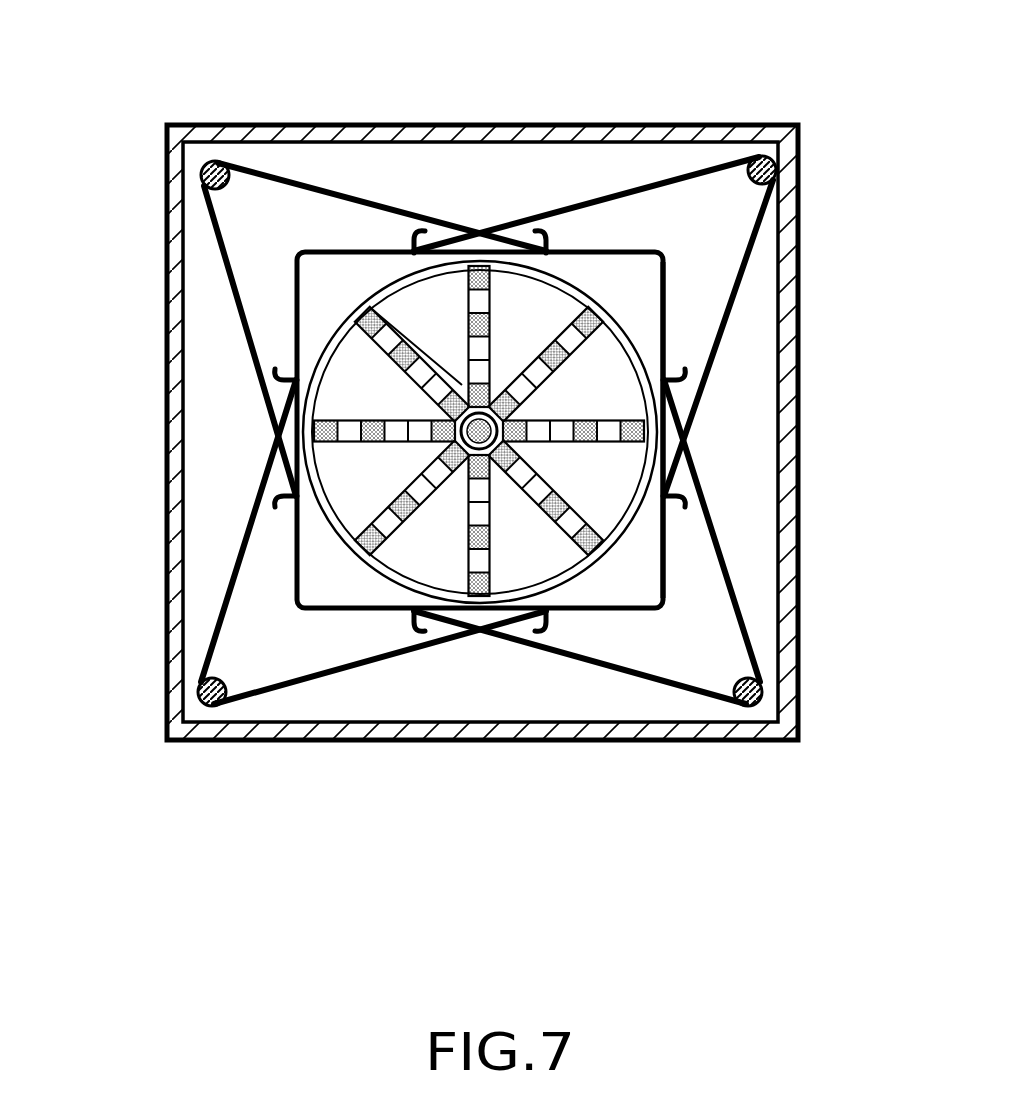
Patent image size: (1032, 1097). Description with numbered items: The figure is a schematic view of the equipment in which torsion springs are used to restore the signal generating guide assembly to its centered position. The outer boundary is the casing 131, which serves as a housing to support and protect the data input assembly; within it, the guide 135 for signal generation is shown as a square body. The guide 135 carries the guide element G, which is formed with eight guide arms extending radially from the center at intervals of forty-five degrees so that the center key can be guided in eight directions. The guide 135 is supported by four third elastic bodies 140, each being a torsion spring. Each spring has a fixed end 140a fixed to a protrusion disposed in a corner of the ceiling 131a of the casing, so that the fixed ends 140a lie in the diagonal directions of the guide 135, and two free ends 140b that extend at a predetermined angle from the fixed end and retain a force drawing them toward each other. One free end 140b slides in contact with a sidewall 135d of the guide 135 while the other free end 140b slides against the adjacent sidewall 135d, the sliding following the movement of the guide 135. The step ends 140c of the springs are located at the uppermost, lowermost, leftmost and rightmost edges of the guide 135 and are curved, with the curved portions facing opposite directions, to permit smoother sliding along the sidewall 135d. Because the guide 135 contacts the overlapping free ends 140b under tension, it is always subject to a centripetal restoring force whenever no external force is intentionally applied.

The casing 131 is at (494, 120).
The ceiling of the casing 131a is at (600, 156).
The guide for signal generation 135 is at (300, 246).
The sidewall of the signal generation guide 135d is at (668, 298).
The third elastic body 140 is at (470, 445).
The fixed end 140a is at (215, 162).
The free end 140b is at (330, 196).
The step end 140c is at (283, 370).
The guide element G is at (414, 345).